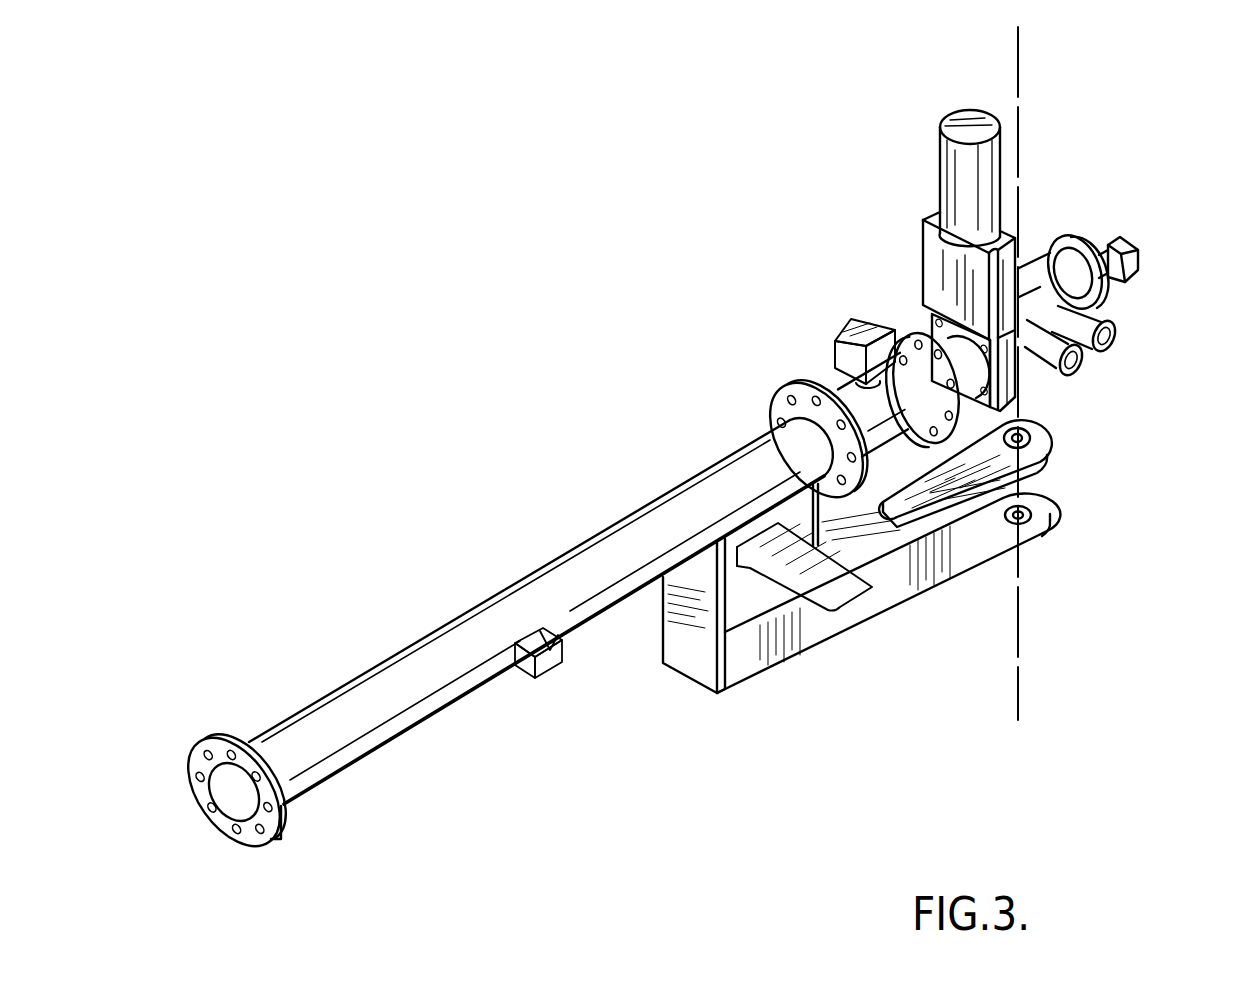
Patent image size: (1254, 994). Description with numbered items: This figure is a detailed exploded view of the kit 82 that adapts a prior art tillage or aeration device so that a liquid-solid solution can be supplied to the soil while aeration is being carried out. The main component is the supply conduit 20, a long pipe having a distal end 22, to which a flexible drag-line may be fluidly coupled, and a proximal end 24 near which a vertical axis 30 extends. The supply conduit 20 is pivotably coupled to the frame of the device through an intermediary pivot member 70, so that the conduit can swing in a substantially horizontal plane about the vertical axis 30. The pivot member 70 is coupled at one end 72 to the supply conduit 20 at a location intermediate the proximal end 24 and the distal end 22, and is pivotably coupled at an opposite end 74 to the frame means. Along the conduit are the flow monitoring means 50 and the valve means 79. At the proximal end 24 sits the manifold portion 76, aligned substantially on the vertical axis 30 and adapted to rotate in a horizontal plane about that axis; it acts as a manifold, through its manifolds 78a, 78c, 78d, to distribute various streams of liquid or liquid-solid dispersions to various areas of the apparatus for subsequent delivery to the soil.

The supply conduit 20 is at (518, 582).
The distal end 22 is at (289, 726).
The proximal end 24 is at (1122, 240).
The vertical axis 30 is at (1016, 57).
The flow monitoring means 50 is at (835, 368).
The pivot member 70 is at (787, 660).
The one end 72 is at (688, 632).
The opposite end 74 is at (1045, 537).
The manifold portion 76 is at (1048, 262).
The manifold 78a is at (1080, 373).
The manifold 78c is at (1023, 268).
The manifold 78d is at (1120, 326).
The valve means 79 is at (928, 262).
The kit 82 is at (526, 321).